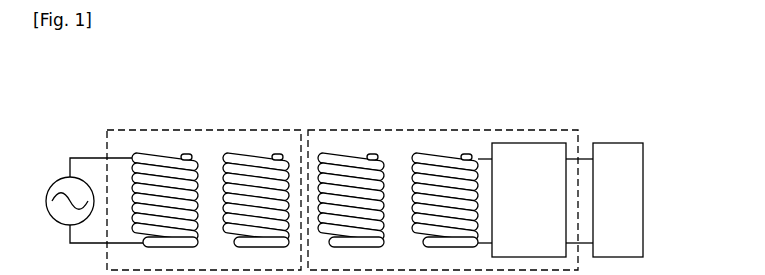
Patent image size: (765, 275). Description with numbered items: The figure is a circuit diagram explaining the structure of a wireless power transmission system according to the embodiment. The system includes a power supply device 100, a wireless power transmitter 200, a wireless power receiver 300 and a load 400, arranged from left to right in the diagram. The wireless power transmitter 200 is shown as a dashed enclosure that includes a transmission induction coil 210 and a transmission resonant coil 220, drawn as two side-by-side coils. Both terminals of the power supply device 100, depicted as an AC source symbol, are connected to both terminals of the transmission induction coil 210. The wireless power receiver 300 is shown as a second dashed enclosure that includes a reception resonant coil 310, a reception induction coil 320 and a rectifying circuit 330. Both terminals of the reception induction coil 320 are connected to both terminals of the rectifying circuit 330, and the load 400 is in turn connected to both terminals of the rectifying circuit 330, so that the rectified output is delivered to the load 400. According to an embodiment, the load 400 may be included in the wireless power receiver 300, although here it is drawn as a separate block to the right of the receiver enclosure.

The power supply device 100 is at (52, 178).
The wireless power transmitter 200 is at (123, 128).
The transmission induction coil 210 is at (176, 157).
The transmission resonant coil 220 is at (257, 160).
The wireless power receiver 300 is at (389, 130).
The reception resonant coil 310 is at (345, 158).
The reception induction coil 320 is at (450, 160).
The rectifying circuit 330 is at (532, 143).
The load 400 is at (617, 143).